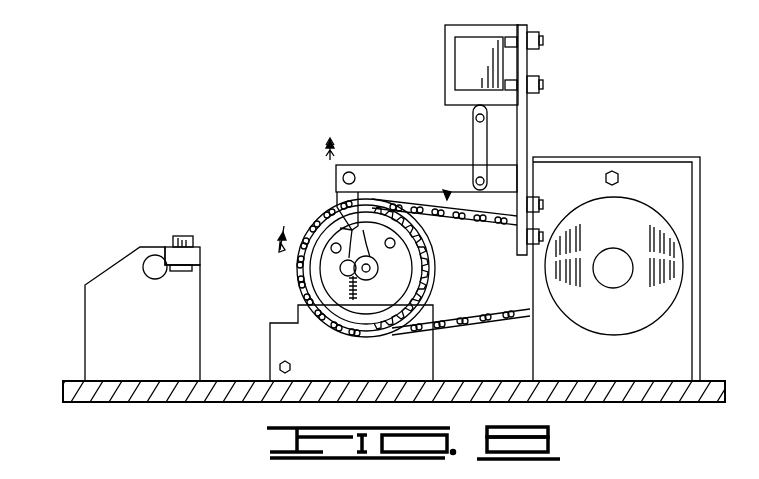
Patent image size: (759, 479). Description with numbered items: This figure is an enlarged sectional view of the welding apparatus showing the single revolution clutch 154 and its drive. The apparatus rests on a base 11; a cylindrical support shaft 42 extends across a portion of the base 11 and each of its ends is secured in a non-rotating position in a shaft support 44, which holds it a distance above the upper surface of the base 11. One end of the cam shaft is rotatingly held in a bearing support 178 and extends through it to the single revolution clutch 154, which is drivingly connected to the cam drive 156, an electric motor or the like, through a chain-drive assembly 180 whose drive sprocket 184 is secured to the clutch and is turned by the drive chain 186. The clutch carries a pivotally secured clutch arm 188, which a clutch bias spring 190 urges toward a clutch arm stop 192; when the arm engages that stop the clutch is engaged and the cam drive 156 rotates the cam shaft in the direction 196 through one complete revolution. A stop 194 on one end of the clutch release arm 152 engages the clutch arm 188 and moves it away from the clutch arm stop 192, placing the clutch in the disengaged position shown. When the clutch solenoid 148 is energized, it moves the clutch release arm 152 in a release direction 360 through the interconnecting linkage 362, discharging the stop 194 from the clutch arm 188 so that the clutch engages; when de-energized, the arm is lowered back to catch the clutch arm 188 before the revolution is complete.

The base 11 is at (712, 381).
The support shaft 42 is at (150, 262).
The shaft support 44 is at (107, 282).
The clutch solenoid 148 is at (466, 56).
The clutch release arm 152 is at (410, 176).
The single revolution clutch 154 is at (428, 297).
The cam drive 156 is at (627, 212).
The bearing support 178 is at (278, 342).
The chain-drive assembly 180 is at (447, 198).
The drive sprocket 184 is at (372, 265).
The drive chain 186 is at (463, 328).
The clutch arm 188 is at (420, 238).
The clutch bias spring 190 is at (345, 286).
The clutch arm stop 192 is at (340, 226).
The stop 194 is at (345, 212).
The direction 196 is at (286, 232).
The release direction 360 is at (325, 150).
The interconnecting linkage 362 is at (482, 148).